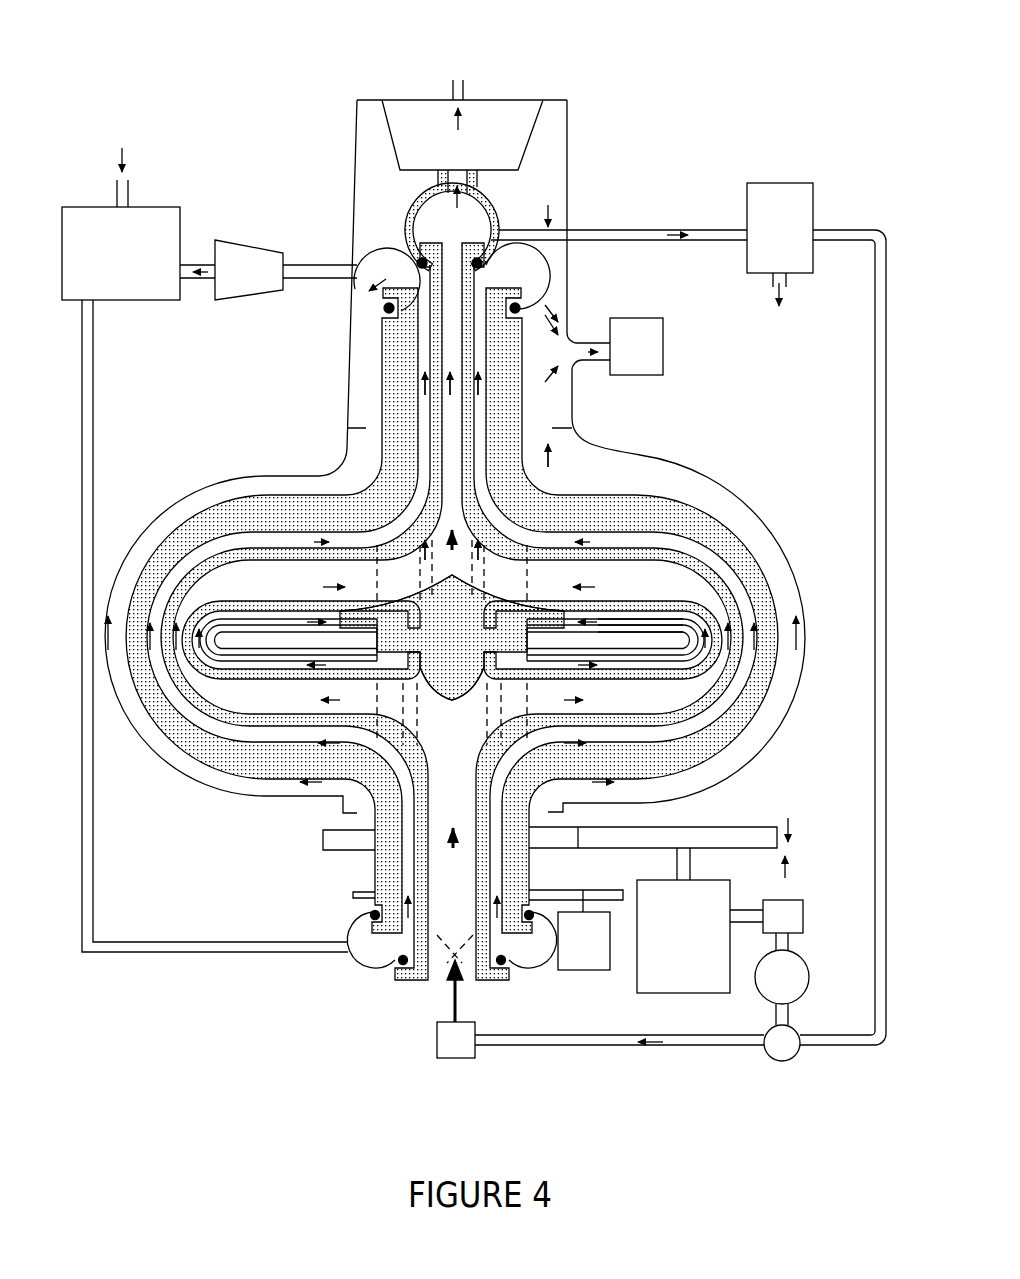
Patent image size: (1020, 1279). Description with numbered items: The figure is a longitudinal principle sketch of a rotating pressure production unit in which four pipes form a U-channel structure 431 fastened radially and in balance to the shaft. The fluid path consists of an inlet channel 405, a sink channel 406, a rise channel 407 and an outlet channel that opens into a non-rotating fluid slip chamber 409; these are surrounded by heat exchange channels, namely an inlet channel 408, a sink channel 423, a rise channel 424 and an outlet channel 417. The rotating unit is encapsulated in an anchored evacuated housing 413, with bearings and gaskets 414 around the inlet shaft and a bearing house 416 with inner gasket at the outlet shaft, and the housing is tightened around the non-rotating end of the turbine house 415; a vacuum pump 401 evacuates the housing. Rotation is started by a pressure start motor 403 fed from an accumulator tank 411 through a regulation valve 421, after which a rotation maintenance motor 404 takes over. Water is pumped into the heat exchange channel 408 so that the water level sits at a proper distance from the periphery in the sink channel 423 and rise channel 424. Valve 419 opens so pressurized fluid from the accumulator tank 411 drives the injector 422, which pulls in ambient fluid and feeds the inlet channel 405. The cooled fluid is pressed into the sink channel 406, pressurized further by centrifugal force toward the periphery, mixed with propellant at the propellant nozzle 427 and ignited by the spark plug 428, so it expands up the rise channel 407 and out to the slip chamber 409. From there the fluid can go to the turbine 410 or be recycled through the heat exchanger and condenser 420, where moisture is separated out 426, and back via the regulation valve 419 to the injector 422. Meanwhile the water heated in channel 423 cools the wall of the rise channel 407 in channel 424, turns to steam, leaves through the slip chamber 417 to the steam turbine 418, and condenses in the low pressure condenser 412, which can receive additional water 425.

The vacuum pump 401 is at (604, 343).
The pressure start motor 403 is at (700, 920).
The rotation maintenance motor 404 is at (584, 941).
The inlet channel 405 is at (442, 975).
The sink channel 406 is at (330, 710).
The rise channel 407 is at (320, 580).
The heat exchange inlet channel 408 is at (377, 953).
The outlet channel / fluid slip chamber 409 is at (460, 218).
The turbine 410 is at (462, 136).
The accumulator tank 411 is at (782, 987).
The low pressure condenser 412 is at (205, 579).
The evacuated housing 413 is at (610, 445).
The bearings and gaskets 414 is at (370, 810).
The turbine house 415 is at (380, 98).
The bearing house 416 is at (380, 424).
The heat exchange outlet channel / slip chamber 417 is at (385, 272).
The steam turbine 418 is at (286, 270).
The regulation valve 419 is at (782, 1053).
The heat exchanger and condenser 420 is at (816, 614).
The regulation valve 421 is at (783, 925).
The injector 422 is at (600, 1040).
The heat exchange sink channel 423 is at (260, 743).
The heat exchange rise channel 424 is at (295, 622).
The water supply 425 is at (123, 164).
The moisture separation 426 is at (780, 301).
The propellant nozzle 427 is at (727, 656).
The spark plug 428 is at (726, 622).
The U-channel structure 431 is at (742, 550).